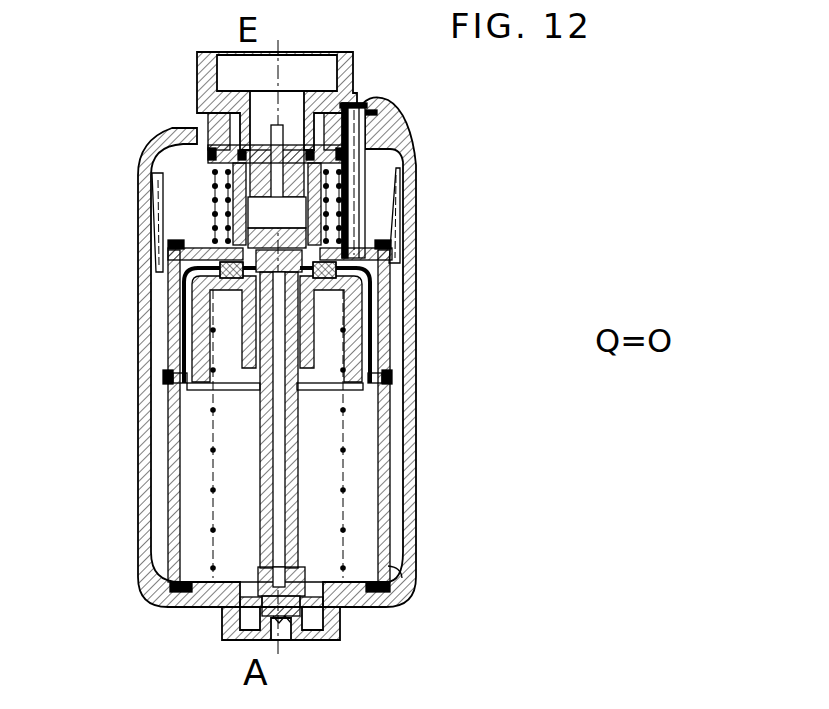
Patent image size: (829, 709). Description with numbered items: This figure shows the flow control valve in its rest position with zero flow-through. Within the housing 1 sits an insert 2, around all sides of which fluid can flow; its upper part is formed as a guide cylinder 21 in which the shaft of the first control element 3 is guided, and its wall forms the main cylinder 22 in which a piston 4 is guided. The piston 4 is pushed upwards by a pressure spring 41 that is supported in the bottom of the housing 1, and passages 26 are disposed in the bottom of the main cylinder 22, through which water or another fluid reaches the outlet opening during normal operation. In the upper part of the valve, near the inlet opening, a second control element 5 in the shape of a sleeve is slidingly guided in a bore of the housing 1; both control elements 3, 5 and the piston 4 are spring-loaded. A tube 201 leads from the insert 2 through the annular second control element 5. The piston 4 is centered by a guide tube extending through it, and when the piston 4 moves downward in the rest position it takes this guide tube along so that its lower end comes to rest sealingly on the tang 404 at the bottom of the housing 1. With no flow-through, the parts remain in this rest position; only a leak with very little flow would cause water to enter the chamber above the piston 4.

The housing 1 is at (421, 506).
The insert 2 is at (390, 437).
The first control element 3 is at (212, 183).
The piston 4 is at (371, 322).
The second control element 5 is at (192, 123).
The guide cylinder 21 is at (214, 208).
The main cylinder 22 is at (178, 538).
The passages 26 is at (392, 566).
The pressure spring 41 is at (213, 450).
The tube 201 is at (363, 170).
The tang 404 is at (283, 614).